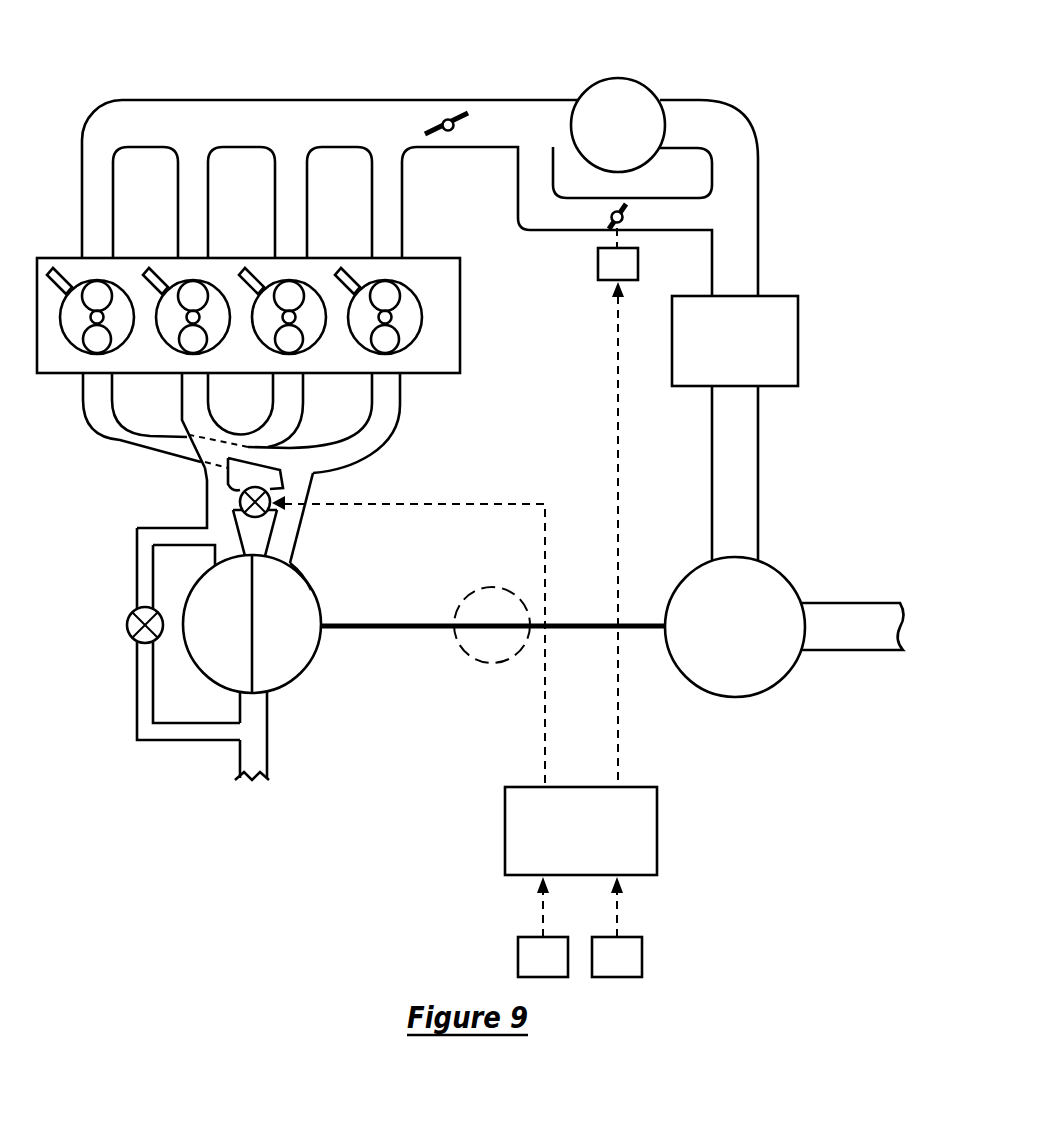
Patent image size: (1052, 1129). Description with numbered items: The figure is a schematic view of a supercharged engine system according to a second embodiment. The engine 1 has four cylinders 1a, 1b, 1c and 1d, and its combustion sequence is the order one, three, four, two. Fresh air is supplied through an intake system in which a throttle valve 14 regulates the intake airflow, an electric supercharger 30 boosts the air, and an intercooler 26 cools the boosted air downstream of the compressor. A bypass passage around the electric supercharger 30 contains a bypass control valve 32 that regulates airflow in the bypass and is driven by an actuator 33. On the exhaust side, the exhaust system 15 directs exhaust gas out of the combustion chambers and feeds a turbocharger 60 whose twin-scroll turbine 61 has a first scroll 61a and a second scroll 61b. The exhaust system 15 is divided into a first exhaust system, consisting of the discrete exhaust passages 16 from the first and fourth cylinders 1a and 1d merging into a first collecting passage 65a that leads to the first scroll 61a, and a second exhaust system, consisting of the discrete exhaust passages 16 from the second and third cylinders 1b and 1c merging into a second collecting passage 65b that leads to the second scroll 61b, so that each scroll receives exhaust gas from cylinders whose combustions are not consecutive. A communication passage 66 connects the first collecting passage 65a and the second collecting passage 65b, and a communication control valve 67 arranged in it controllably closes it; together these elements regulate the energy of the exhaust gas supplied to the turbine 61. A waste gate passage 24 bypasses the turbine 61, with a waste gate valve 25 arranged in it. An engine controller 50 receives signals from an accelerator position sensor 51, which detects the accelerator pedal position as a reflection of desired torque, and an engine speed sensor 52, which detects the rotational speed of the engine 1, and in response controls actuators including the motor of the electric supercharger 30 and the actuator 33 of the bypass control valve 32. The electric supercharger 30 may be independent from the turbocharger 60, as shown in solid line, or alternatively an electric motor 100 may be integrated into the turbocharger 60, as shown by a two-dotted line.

The engine 1 is at (265, 260).
The first cylinder 1a is at (124, 306).
The second cylinder 1b is at (218, 306).
The third cylinder 1c is at (314, 306).
The fourth cylinder 1d is at (410, 306).
The throttle valve 14 is at (458, 112).
The exhaust system 15 is at (283, 744).
The discrete exhaust passages 16 is at (83, 400).
The waste gate passage 24 is at (137, 694).
The waste gate valve 25 is at (127, 622).
The intercooler 26 is at (800, 338).
The electric supercharger 30 is at (616, 78).
The bypass control valve 32 is at (628, 208).
The actuator 33 is at (598, 266).
The engine controller 50 is at (658, 810).
The accelerator position sensor 51 is at (518, 956).
The engine speed sensor 52 is at (642, 957).
The turbocharger 60 is at (802, 692).
The twin-scroll turbine 61 is at (221, 621).
The first scroll 61a is at (303, 572).
The second scroll 61b is at (192, 582).
The first collecting passage 65a is at (302, 533).
The second collecting passage 65b is at (207, 503).
The communication passage 66 is at (206, 476).
The communication control valve 67 is at (285, 480).
The electric motor 100 is at (492, 664).